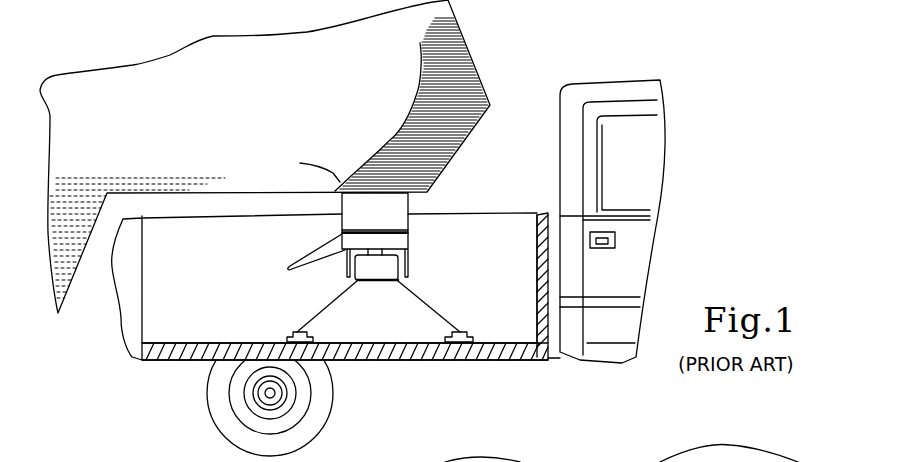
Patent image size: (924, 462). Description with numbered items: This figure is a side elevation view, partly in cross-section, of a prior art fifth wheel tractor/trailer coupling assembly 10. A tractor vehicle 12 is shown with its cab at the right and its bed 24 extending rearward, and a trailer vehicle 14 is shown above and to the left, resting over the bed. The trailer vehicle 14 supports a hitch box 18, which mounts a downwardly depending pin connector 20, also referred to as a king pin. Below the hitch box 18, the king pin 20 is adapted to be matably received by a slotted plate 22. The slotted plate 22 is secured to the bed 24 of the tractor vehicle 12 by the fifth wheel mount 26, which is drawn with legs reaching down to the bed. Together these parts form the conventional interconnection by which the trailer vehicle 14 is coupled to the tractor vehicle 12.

The prior art load detection arm assembly 10 is at (262, 278).
The tractor vehicle 12 is at (686, 73).
The trailer vehicle 14 is at (437, 59).
The hitch box 18 is at (357, 206).
The pin connector 20 is at (381, 229).
The slotted plate 22 is at (392, 242).
The bed 24 is at (383, 358).
The fifth wheel mount 26 is at (380, 295).